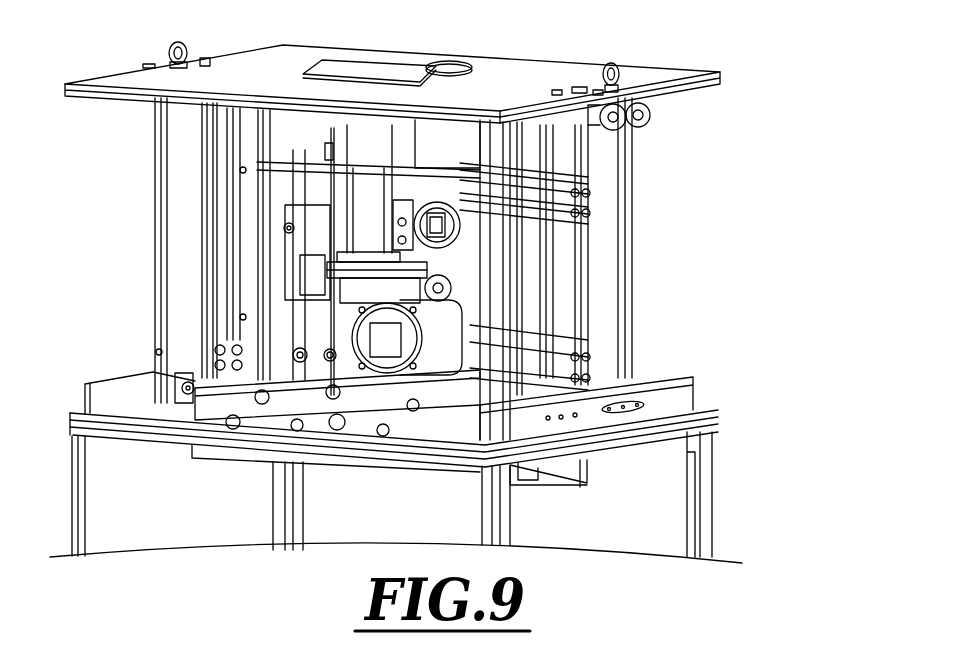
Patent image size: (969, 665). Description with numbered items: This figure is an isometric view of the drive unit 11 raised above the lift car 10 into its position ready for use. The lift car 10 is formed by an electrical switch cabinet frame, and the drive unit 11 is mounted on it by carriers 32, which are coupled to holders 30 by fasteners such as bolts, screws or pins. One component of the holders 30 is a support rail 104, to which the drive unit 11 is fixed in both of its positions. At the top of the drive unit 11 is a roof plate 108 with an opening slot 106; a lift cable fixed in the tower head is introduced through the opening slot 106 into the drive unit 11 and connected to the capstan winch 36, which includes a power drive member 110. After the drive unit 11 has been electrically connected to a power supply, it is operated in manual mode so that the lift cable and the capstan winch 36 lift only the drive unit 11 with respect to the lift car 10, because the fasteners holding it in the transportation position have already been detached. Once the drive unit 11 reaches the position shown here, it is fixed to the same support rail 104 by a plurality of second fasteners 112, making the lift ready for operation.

The lift car 10 is at (453, 455).
The drive unit 11 is at (435, 220).
The holders 30 is at (393, 269).
The carriers 32 is at (158, 243).
The capstan winch 36 is at (318, 224).
The support rail 104 is at (640, 423).
The opening slot 106 is at (385, 75).
The roof plate 108 is at (392, 65).
The power drive member 110 is at (347, 178).
The second fasteners 112 is at (641, 410).